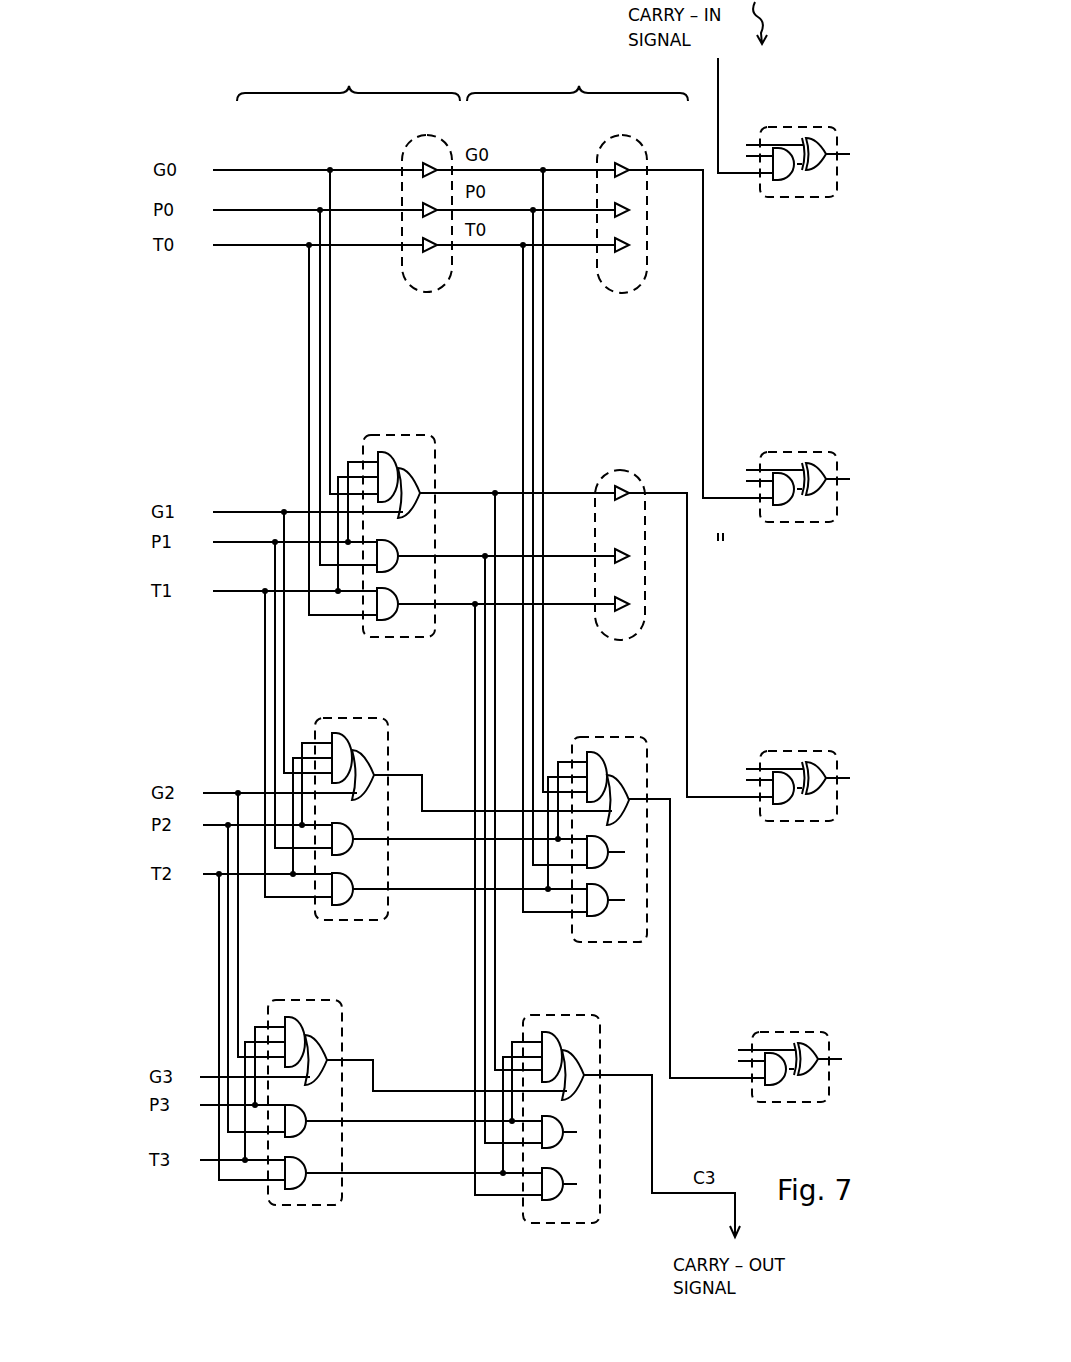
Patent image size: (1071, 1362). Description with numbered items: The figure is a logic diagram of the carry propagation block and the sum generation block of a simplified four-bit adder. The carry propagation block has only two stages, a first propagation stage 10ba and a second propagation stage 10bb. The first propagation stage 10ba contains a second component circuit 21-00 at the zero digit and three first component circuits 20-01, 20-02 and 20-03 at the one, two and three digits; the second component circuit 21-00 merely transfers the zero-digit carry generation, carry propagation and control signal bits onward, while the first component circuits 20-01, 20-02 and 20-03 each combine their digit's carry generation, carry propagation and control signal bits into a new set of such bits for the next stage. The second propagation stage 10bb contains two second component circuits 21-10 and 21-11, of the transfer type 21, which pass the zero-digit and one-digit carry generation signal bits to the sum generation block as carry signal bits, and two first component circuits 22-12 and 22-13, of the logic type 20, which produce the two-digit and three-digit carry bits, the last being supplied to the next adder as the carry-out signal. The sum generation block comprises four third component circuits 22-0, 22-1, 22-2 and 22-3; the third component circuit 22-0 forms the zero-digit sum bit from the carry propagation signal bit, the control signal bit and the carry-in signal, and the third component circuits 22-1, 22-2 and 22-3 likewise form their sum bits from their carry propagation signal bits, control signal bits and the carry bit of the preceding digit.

The first propagation stage 10ba is at (348, 78).
The second propagation stage 10bb is at (577, 79).
The second component circuit 21-00 is at (399, 151).
The second component circuit 21 is at (657, 154).
The second component circuit 21-10 is at (605, 292).
The second component circuit 21-11 is at (600, 622).
The first component circuit 20-01 is at (412, 405).
The first component circuit 20-02 is at (337, 718).
The first component circuit 20-03 is at (292, 1000).
The first component circuit 20 is at (595, 737).
The first component circuit 22-12 is at (632, 943).
The first component circuit 22-13 is at (578, 1223).
The third component circuit 22-0 is at (794, 124).
The third component circuit 22-1 is at (794, 449).
The third component circuit 22-2 is at (794, 748).
The third component circuit 22-3 is at (786, 1029).